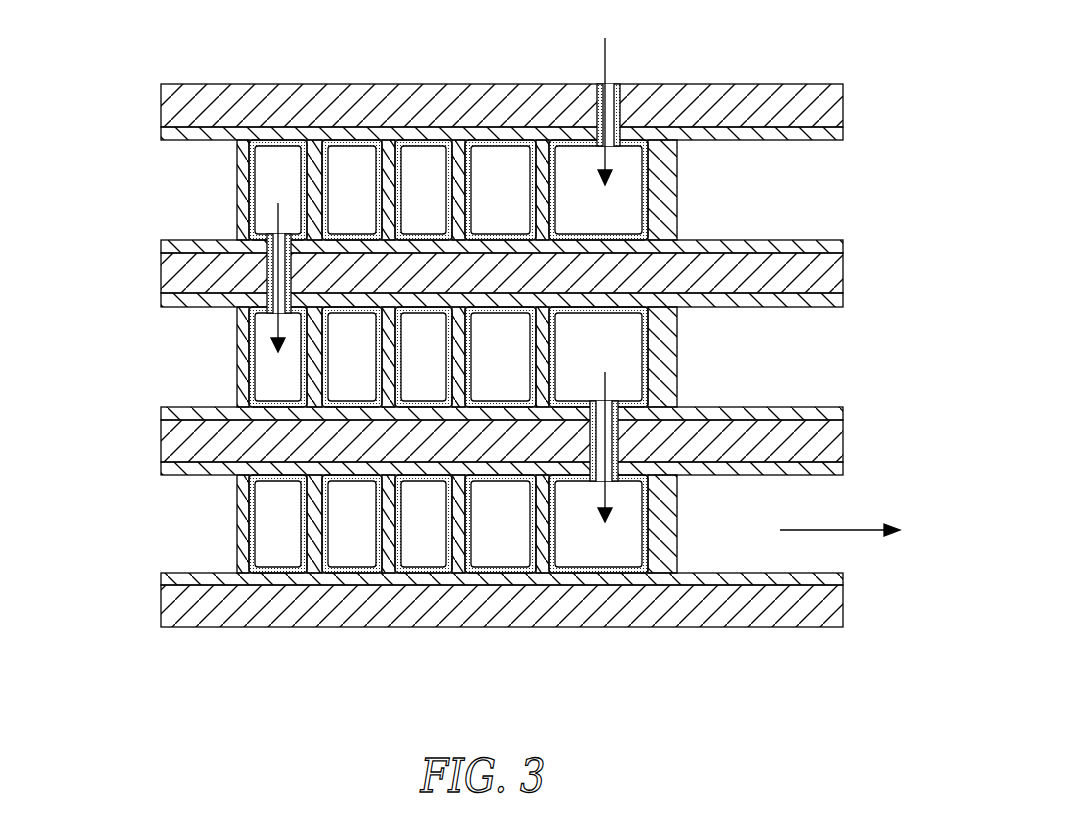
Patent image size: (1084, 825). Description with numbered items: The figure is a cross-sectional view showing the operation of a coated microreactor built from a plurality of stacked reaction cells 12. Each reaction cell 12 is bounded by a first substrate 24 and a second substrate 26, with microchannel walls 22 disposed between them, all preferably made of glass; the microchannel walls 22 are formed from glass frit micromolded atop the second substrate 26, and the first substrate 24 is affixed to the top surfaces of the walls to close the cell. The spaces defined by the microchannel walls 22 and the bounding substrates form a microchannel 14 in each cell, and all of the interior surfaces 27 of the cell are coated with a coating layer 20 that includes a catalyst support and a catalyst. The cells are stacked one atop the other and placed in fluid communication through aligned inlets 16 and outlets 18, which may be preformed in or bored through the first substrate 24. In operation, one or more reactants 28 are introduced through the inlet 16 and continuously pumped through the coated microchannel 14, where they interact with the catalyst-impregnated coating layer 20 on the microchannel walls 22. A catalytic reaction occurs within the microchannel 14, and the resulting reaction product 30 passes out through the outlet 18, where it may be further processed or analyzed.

The reaction cell 12 is at (156, 185).
The microchannel 14 is at (352, 175).
The inlet 16 is at (608, 88).
The outlet 18 is at (600, 408).
The coating layer 20 is at (428, 138).
The microchannel walls 22 is at (666, 188).
The first substrate 24 is at (843, 113).
The second substrate 26 is at (843, 283).
The interior surfaces 27 is at (289, 130).
The reactants 28 is at (601, 48).
The reaction product 30 is at (845, 531).